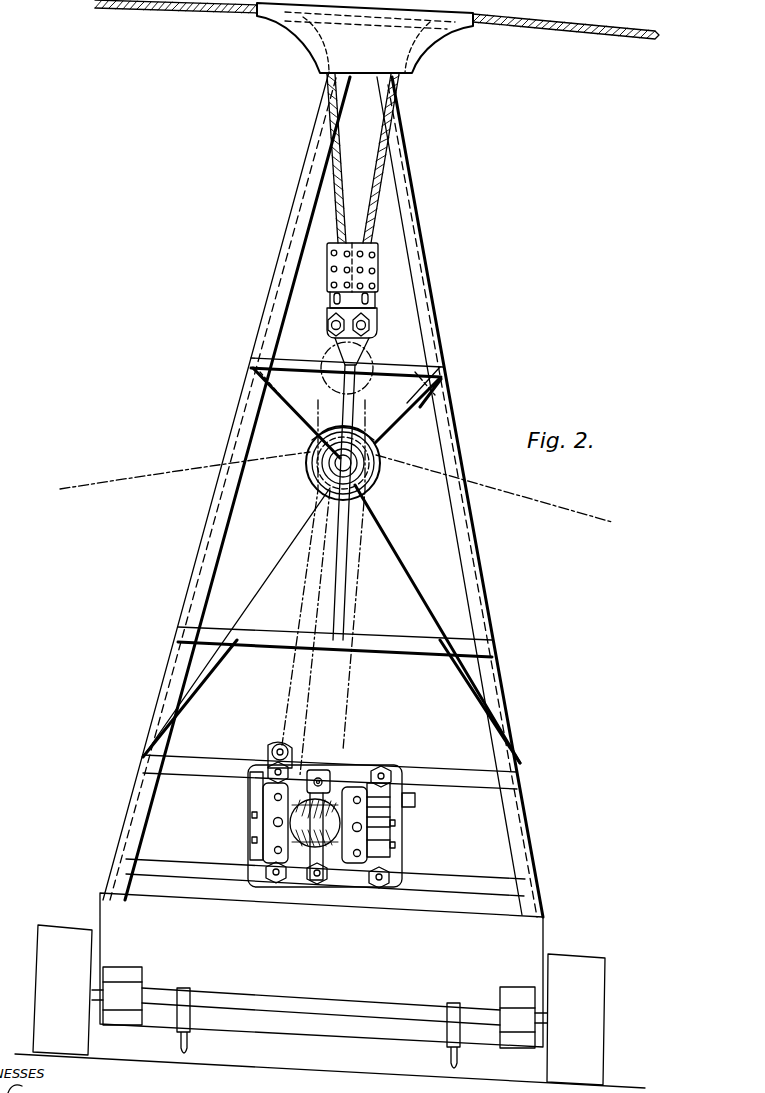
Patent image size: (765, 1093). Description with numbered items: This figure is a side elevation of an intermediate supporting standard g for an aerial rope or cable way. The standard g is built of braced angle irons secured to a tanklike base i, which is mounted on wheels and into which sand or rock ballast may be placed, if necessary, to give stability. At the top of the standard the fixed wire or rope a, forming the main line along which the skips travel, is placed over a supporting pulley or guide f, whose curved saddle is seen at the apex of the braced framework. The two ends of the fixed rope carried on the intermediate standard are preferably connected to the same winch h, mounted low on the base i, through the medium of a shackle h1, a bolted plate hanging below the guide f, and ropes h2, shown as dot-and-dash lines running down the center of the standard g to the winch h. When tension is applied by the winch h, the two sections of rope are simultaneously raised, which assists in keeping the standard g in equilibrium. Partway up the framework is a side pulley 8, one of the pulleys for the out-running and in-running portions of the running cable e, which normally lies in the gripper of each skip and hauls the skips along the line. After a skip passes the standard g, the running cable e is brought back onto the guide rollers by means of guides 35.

The fixed wire or rope a is at (131, 6).
The supporting pulleys or guides f is at (308, 50).
The shackle h1 is at (365, 284).
The portable standard g is at (417, 407).
The guides 35 is at (338, 555).
The side pulley 8 is at (368, 490).
The running cable e is at (128, 470).
The ropes h2 is at (347, 690).
The winch h is at (333, 807).
The tanklike base i is at (330, 990).